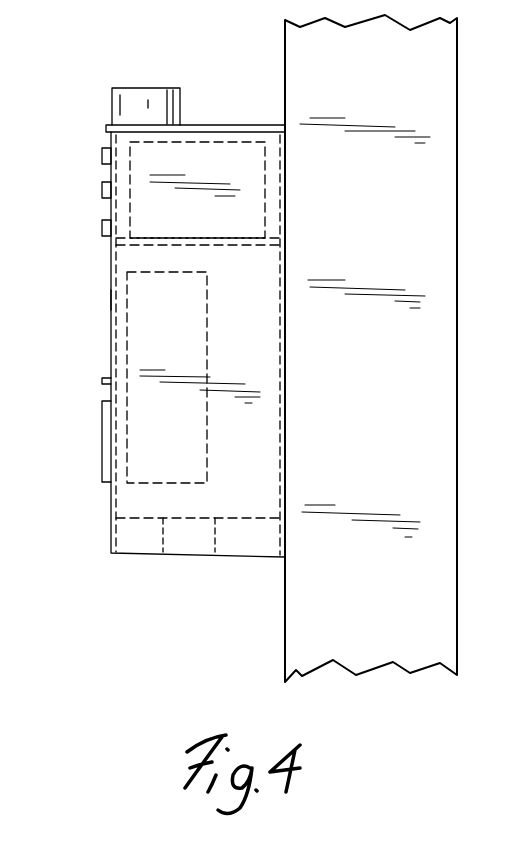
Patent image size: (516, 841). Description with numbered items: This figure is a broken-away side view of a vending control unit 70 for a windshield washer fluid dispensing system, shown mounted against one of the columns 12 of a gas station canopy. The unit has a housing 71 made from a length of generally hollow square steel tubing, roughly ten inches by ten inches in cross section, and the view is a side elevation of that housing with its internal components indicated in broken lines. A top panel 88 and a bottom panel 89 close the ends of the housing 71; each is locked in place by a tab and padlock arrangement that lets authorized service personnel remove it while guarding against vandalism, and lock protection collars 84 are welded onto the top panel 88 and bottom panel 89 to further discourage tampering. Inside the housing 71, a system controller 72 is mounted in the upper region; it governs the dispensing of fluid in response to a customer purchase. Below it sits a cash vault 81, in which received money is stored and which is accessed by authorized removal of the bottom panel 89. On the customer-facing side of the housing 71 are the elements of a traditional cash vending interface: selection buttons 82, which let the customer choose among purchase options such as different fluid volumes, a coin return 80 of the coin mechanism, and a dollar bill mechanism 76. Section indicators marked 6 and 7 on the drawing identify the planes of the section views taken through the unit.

The columns 12 is at (285, 628).
The section line 6- 6 is at (68, 35).
The section line 7- 7 is at (62, 540).
The vending control unit 70 is at (76, 160).
The housing 71 is at (111, 300).
The system controller 72 is at (265, 185).
The dollar bill mechanism 76 is at (98, 462).
The coin return 80 is at (102, 381).
The cash vault 81 is at (207, 355).
The selection buttons 82 is at (102, 228).
The lock protection collars 84 is at (180, 90).
The top panel 88 is at (235, 125).
The bottom panel 89 is at (250, 518).